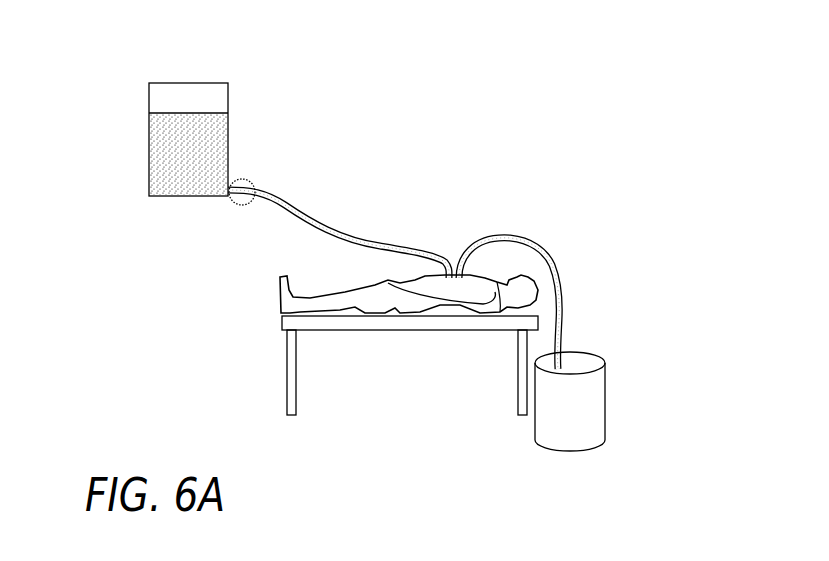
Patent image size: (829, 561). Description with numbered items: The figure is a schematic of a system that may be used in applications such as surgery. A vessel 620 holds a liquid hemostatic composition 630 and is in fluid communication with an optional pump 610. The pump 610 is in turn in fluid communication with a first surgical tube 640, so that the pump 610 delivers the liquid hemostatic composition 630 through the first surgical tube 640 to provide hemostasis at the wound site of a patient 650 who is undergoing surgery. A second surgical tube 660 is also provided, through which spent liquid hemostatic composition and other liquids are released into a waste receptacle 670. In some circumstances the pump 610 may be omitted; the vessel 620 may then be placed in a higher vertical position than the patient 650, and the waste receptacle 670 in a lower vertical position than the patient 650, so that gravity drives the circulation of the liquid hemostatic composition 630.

The pump 610 is at (242, 222).
The vessel 620 is at (250, 138).
The liquid hemostatic composition 630 is at (175, 178).
The first surgical tube 640 is at (347, 203).
The patient 650 is at (477, 220).
The second surgical tube 660 is at (561, 235).
The waste receptacle 670 is at (605, 398).